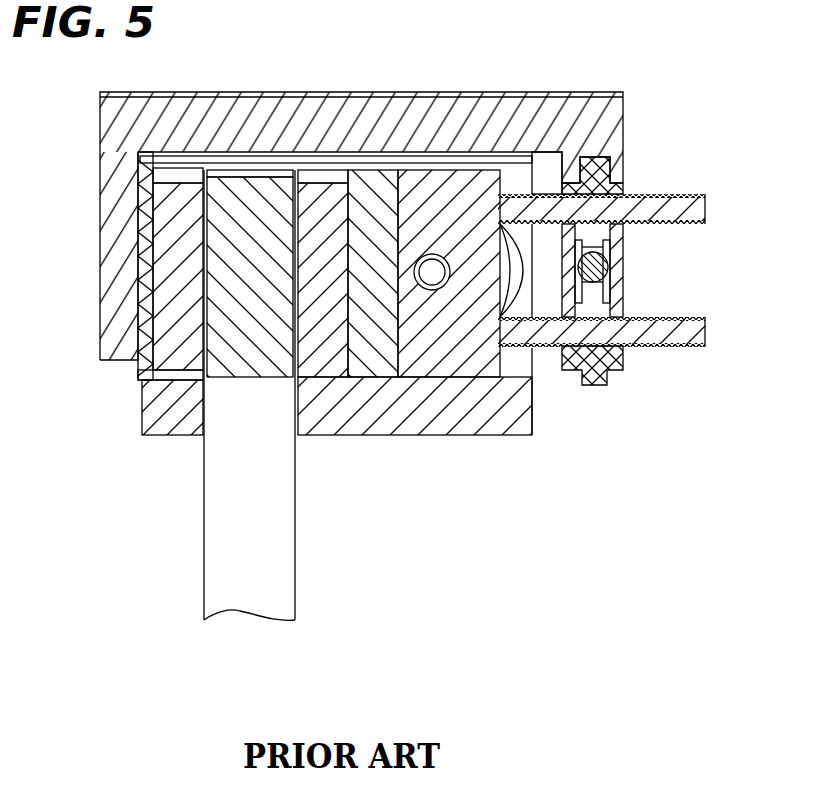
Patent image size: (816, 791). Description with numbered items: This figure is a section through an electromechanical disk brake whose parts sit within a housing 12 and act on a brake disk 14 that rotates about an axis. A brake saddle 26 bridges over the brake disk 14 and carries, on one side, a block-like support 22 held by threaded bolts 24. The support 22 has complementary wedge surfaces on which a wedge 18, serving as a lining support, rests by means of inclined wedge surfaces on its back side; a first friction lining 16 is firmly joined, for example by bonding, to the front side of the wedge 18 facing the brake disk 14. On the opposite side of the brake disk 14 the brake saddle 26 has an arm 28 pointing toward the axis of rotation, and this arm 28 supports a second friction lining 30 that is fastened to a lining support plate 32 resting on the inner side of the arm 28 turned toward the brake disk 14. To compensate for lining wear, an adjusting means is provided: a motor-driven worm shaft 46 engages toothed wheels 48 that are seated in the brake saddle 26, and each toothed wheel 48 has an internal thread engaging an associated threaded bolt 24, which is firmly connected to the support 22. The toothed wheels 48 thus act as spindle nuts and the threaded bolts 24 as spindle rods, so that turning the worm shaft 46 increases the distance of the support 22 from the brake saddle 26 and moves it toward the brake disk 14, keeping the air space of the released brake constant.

The housing 12 is at (143, 407).
The brake disk 14 is at (262, 577).
The first friction lining 16 is at (320, 345).
The wedge 18 is at (375, 345).
The support 22 is at (472, 375).
The threaded bolt 24 is at (683, 208).
The brake saddle 26 is at (388, 125).
The arm 28 is at (118, 292).
The second friction lining 30 is at (180, 330).
The lining support plate 32 is at (138, 372).
The worm shaft 46 is at (603, 263).
The toothed wheel 48 is at (593, 177).